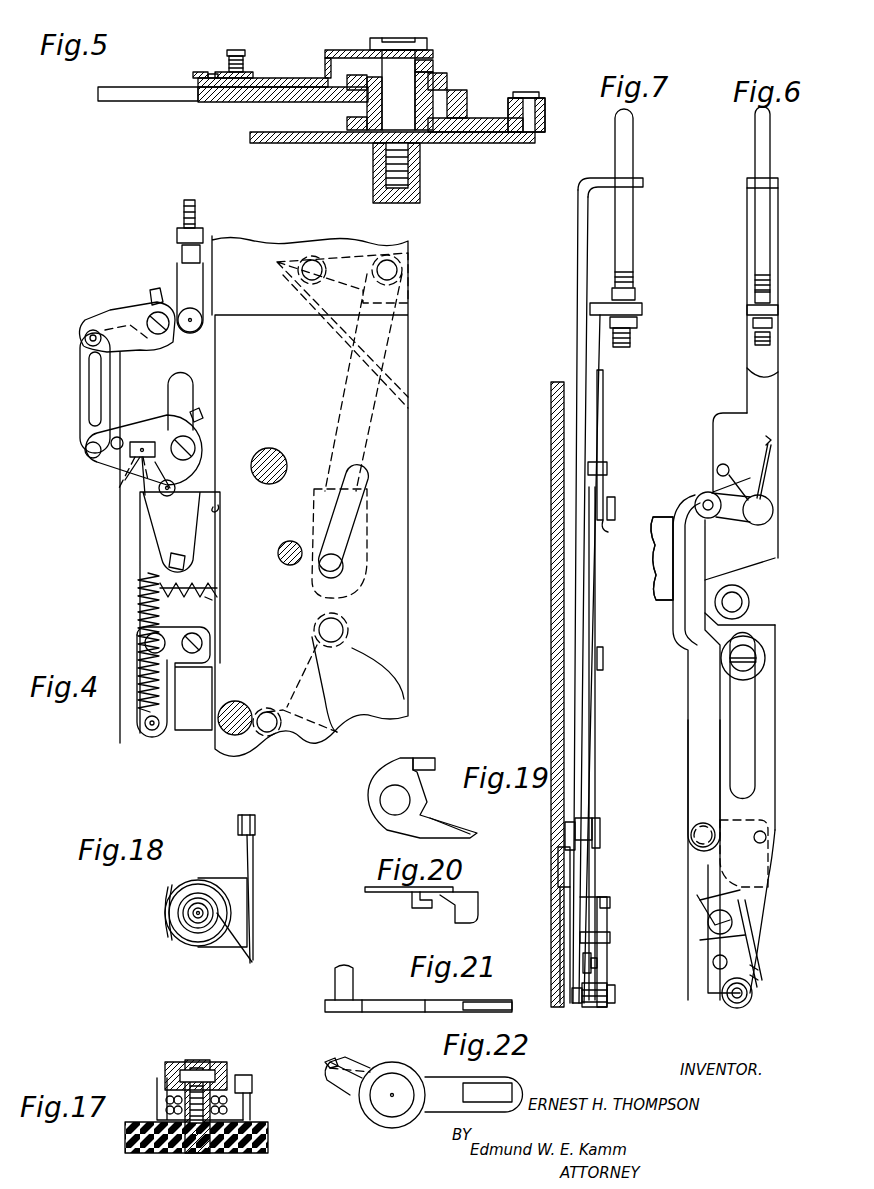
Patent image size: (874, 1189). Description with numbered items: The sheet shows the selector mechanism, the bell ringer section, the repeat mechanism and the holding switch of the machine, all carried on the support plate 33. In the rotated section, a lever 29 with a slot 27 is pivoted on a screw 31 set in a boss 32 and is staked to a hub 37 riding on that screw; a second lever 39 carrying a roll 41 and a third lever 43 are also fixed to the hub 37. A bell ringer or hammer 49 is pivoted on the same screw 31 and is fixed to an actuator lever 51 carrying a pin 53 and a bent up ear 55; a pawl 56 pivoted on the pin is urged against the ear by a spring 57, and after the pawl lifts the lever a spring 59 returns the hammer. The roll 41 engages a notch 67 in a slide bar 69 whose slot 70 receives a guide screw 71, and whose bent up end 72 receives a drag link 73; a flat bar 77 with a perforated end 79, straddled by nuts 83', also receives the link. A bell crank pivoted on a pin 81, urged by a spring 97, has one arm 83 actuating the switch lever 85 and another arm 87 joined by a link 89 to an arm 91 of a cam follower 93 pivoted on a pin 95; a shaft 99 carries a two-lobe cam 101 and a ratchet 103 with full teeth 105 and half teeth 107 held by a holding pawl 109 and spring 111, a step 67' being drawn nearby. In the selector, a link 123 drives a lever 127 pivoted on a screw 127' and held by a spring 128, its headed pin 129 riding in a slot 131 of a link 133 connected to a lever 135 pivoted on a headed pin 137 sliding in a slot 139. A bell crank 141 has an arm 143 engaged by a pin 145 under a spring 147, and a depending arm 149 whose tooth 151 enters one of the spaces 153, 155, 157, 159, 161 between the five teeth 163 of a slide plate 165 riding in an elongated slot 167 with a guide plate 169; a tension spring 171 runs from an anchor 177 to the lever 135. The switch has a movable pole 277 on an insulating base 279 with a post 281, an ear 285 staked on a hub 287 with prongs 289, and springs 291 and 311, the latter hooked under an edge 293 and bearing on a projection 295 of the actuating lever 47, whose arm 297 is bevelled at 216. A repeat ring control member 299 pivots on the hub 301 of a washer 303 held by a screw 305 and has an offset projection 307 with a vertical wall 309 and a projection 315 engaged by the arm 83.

In FIG. 5, the slot 27 is at (125, 97).
In FIG. 5, the lever 29 is at (215, 98).
In FIG. 5, the screw 31 is at (400, 48).
In FIG. 5, the boss 32 is at (420, 175).
In FIG. 5, the support plate 33 is at (460, 143).
In FIG. 4, the support plate 33 is at (264, 496).
In FIG. 7, the support plate 33 is at (551, 472).
In FIG. 5, the hub 37 is at (452, 118).
In FIG. 5, the second lever 39 is at (470, 118).
In FIG. 7, the second lever 39 is at (653, 560).
In FIG. 6, the second lever 39 is at (730, 575).
In FIG. 5, the roll 41 is at (545, 104).
In FIG. 6, the roll 41 is at (749, 600).
In FIG. 5, the third lever 43 is at (447, 80).
In FIG. 22, the actuating lever 47 is at (385, 1065).
In FIG. 17, the actuating lever 47 is at (165, 1075).
In FIG. 5, the bell ringer or hammer 49 is at (360, 50).
In FIG. 5, the actuator lever 51 is at (280, 80).
In FIG. 5, the pin 53 is at (240, 50).
In FIG. 5, the bent up ear 55 is at (210, 73).
In FIG. 5, the pawl 56 is at (193, 75).
In FIG. 5, the spring 57 is at (225, 72).
In FIG. 5, the spring 59 is at (433, 66).
In FIG. 6, the notch 67 is at (756, 564).
In FIG. 6, the step 67' is at (755, 615).
In FIG. 7, the slide bar 69 is at (578, 226).
In FIG. 6, the slide bar 69 is at (747, 232).
In FIG. 6, the slot 70 is at (755, 728).
In FIG. 7, the guide screw 71 is at (603, 655).
In FIG. 6, the guide screw 71 is at (765, 665).
In FIG. 7, the bent up end 72 is at (645, 184).
In FIG. 6, the bent up end 72 is at (778, 182).
In FIG. 7, the drag link 73 is at (630, 145).
In FIG. 6, the drag link 73 is at (768, 142).
In FIG. 7, the flat bar 77 is at (585, 352).
In FIG. 6, the flat bar 77 is at (770, 365).
In FIG. 7, the bent up perforated end 79 is at (642, 308).
In FIG. 6, the bent up perforated end 79 is at (778, 310).
In FIG. 7, the pin 81 is at (615, 508).
In FIG. 6, the pin 81 is at (773, 508).
In FIG. 7, the arm 83 is at (618, 445).
In FIG. 6, the arm 83 is at (757, 445).
In FIG. 6, the nuts 83' is at (727, 310).
In FIG. 19, the switch lever 85 is at (392, 832).
In FIG. 7, the arm 87 is at (606, 527).
In FIG. 6, the arm 87 is at (720, 520).
In FIG. 7, the link 89 is at (596, 597).
In FIG. 6, the link 89 is at (690, 695).
In FIG. 7, the arm 91 is at (565, 840).
In FIG. 6, the arm 91 is at (703, 847).
In FIG. 7, the cam follower 93 is at (558, 878).
In FIG. 6, the cam follower 93 is at (768, 885).
In FIG. 6, the pin 95 is at (766, 837).
In FIG. 7, the spring 97 is at (607, 470).
In FIG. 6, the spring 97 is at (768, 470).
In FIG. 6, the shaft 99 is at (708, 925).
In FIG. 7, the two-lobe cam 101 is at (563, 940).
In FIG. 6, the two-lobe cam 101 is at (708, 890).
In FIG. 6, the ratchet 103 is at (713, 965).
In FIG. 7, the full teeth 105 is at (592, 903).
In FIG. 6, the full teeth 105 is at (700, 912).
In FIG. 7, the half teeth 107 is at (605, 897).
In FIG. 6, the half teeth 107 is at (750, 912).
In FIG. 7, the holding pawl 109 is at (603, 968).
In FIG. 6, the holding pawl 109 is at (760, 975).
In FIG. 7, the spring 111 is at (582, 1007).
In FIG. 6, the spring 111 is at (720, 995).
In FIG. 4, the link 123 is at (185, 272).
In FIG. 4, the lever 127 is at (127, 316).
In FIG. 4, the screw 127' is at (196, 329).
In FIG. 4, the spring 128 is at (165, 283).
In FIG. 4, the headed pin 129 is at (90, 330).
In FIG. 4, the slot 131 is at (92, 384).
In FIG. 4, the link 133 is at (82, 438).
In FIG. 4, the lever 135 is at (138, 430).
In FIG. 4, the headed pin 137 is at (196, 440).
In FIG. 4, the slot 139 is at (193, 405).
In FIG. 4, the bell crank 141 is at (198, 485).
In FIG. 4, the arm 143 is at (115, 485).
In FIG. 4, the pin 145 is at (110, 450).
In FIG. 4, the spring 147 is at (203, 415).
In FIG. 4, the depending arm 149 is at (195, 540).
In FIG. 4, the tooth 151 is at (190, 560).
In FIG. 4, the space 153 is at (140, 592).
In FIG. 4, the space 155 is at (140, 612).
In FIG. 4, the space 157 is at (174, 668).
In FIG. 4, the space 159 is at (210, 590).
In FIG. 4, the space 161 is at (215, 605).
In FIG. 4, the teeth 163 is at (200, 585).
In FIG. 4, the slide plate 165 is at (212, 655).
In FIG. 4, the elongated slot 167 is at (220, 507).
In FIG. 4, the guide plate 169 is at (140, 730).
In FIG. 4, the tension spring 171 is at (140, 625).
In FIG. 4, the anchor 177 is at (150, 732).
In FIG. 21, the bevel 216 is at (480, 1002).
In FIG. 22, the bevel 216 is at (495, 1083).
In FIG. 18, the movable pole 277 is at (238, 825).
In FIG. 17, the movable pole 277 is at (252, 1083).
In FIG. 17, the insulating base 279 is at (268, 1137).
In FIG. 18, the post 281 is at (198, 918).
In FIG. 17, the post 281 is at (195, 1153).
In FIG. 18, the ear 285 is at (236, 878).
In FIG. 18, the hub 287 is at (185, 925).
In FIG. 17, the hub 287 is at (160, 1153).
In FIG. 18, the prongs 289 is at (165, 936).
In FIG. 17, the prongs 289 is at (157, 1082).
In FIG. 22, the spring 291 is at (330, 1058).
In FIG. 17, the spring 291 is at (250, 1100).
In FIG. 18, the edge 293 is at (255, 955).
In FIG. 21, the projection 295 is at (340, 968).
In FIG. 22, the projection 295 is at (343, 1058).
In FIG. 21, the arm 297 is at (400, 1000).
In FIG. 22, the arm 297 is at (440, 1085).
In FIG. 19, the repeat ring control member 299 is at (425, 808).
In FIG. 17, the repeat ring control member 299 is at (230, 1075).
In FIG. 17, the hub 301 is at (180, 1062).
In FIG. 17, the washer 303 is at (212, 1062).
In FIG. 17, the screw 305 is at (190, 1062).
In FIG. 19, the offset projection 307 is at (435, 763).
In FIG. 20, the offset projection 307 is at (415, 908).
In FIG. 19, the vertical wall 309 is at (420, 756).
In FIG. 20, the vertical wall 309 is at (412, 905).
In FIG. 22, the spring 311 is at (328, 1064).
In FIG. 18, the spring 311 is at (248, 962).
In FIG. 17, the spring 311 is at (213, 1153).
In FIG. 19, the projection 315 is at (476, 830).